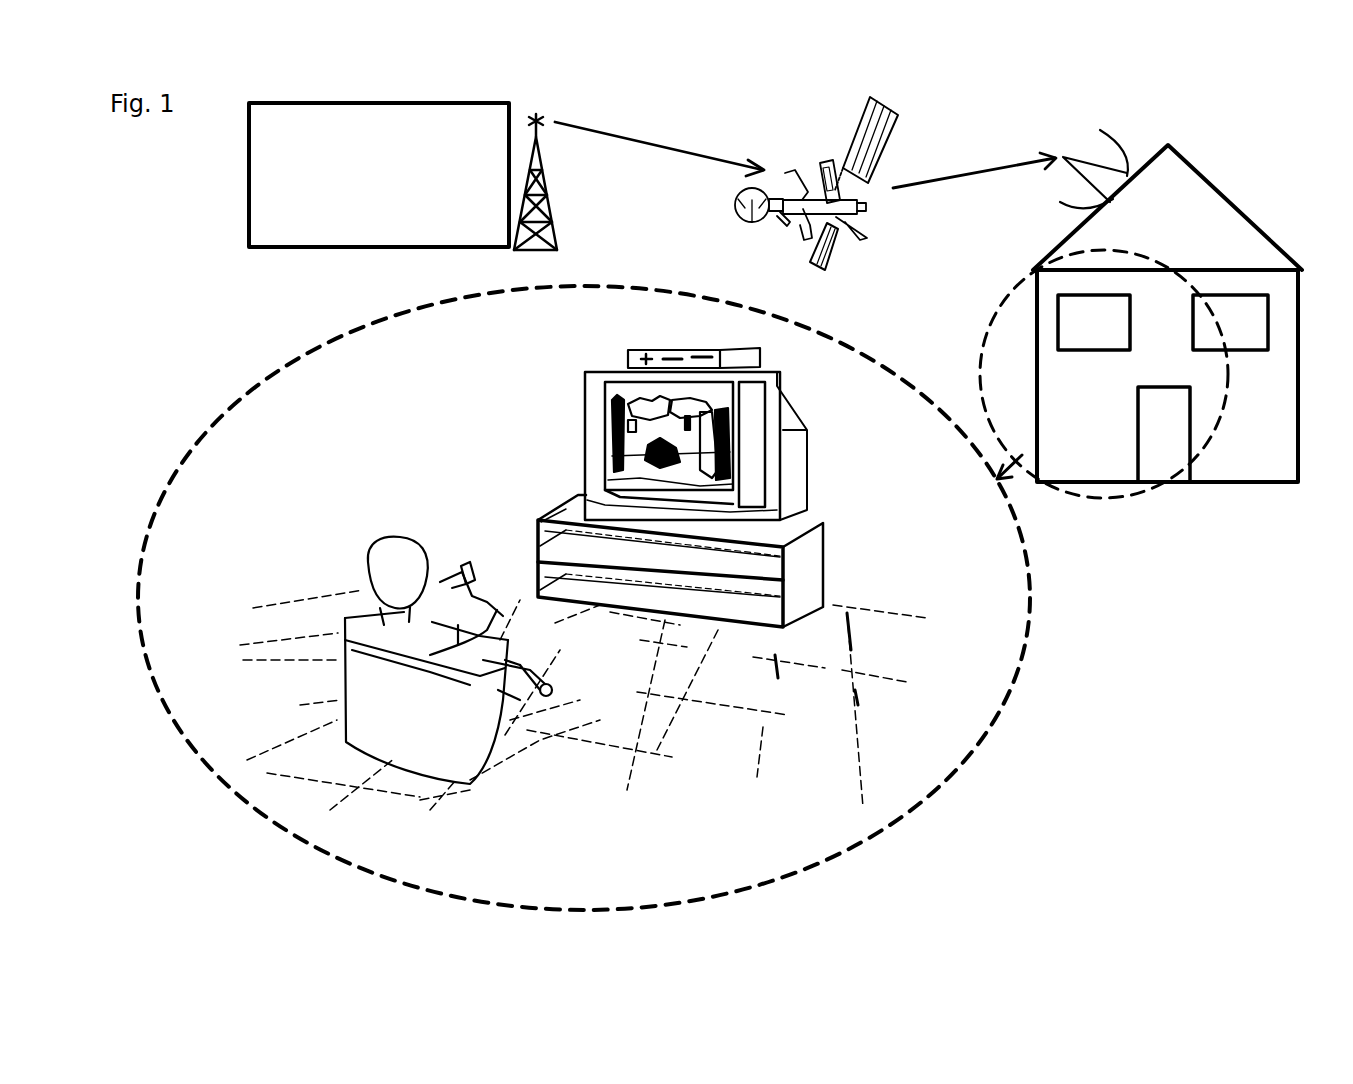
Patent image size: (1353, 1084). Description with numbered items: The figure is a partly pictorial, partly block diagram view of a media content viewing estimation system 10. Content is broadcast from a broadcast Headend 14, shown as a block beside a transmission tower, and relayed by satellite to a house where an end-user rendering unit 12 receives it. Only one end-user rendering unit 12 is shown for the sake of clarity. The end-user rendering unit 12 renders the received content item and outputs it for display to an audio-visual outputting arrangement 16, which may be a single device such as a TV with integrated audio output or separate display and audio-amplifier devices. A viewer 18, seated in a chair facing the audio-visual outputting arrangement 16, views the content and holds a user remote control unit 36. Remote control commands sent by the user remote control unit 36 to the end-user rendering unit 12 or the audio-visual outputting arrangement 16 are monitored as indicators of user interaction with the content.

The media content viewing estimation system 10 is at (210, 366).
The end-user rendering unit 12 is at (627, 356).
The broadcast Headend 14 is at (248, 178).
The audio-visual outputting arrangement 16 is at (584, 438).
The viewer 18 is at (360, 555).
The user remote control unit 36 is at (467, 557).